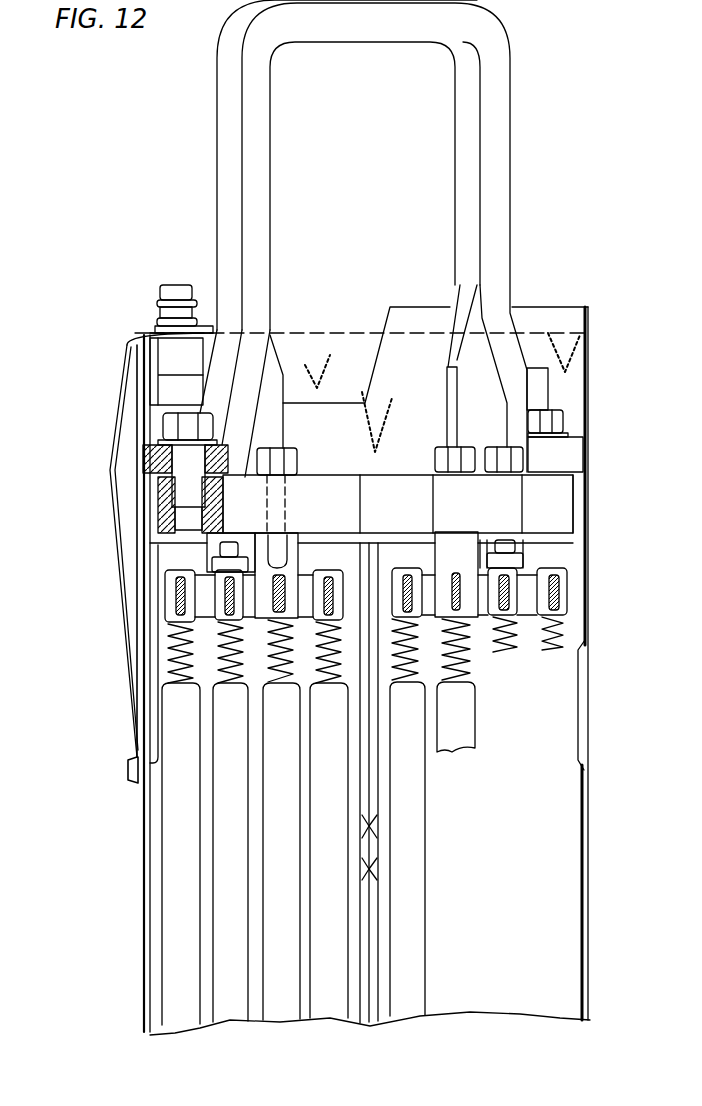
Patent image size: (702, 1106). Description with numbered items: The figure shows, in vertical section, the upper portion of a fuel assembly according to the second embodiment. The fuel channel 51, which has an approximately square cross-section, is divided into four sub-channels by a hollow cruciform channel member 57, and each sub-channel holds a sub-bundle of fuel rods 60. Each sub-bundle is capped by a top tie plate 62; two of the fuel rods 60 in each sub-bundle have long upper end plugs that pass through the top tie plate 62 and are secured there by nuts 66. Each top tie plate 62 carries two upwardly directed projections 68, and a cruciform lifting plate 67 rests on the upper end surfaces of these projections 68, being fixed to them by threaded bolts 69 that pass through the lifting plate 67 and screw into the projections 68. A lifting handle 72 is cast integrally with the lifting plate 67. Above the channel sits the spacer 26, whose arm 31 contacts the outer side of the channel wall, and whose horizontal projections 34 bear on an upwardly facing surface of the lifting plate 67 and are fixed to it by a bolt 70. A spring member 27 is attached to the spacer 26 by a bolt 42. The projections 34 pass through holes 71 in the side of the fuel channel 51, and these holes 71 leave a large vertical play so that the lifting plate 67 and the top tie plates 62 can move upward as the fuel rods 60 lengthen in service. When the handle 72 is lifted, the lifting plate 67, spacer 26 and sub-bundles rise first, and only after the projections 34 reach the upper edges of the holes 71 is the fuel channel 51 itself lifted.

The lifting handle 72 is at (512, 172).
The bolt 42 is at (188, 290).
The arm 31 is at (318, 352).
The hole 71 is at (143, 420).
The horizontal projection 34 is at (160, 457).
The bolt 70 is at (183, 490).
The spacer 26 is at (132, 533).
The spring member 27 is at (115, 584).
The threaded bolt 69 is at (278, 455).
The lifting plate 67 is at (560, 500).
The projection 68 is at (290, 578).
The nut 66 is at (522, 552).
The top tie plate 62 is at (566, 596).
The fuel rod 60 is at (227, 875).
The fuel channel 51 is at (148, 910).
The cruciform channel member 57 is at (378, 935).